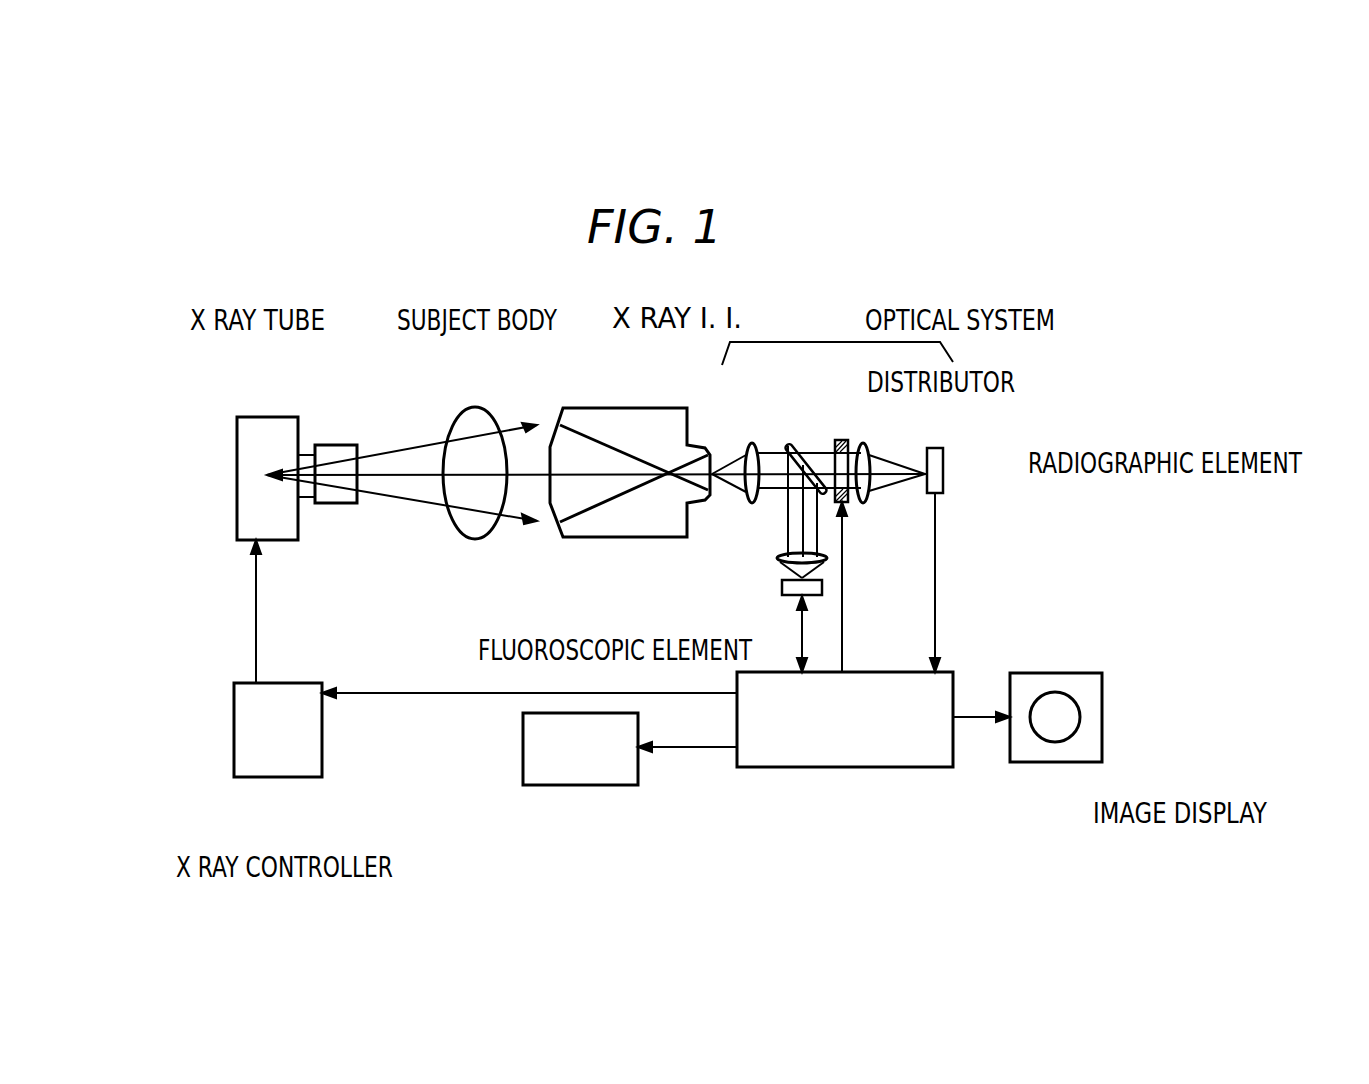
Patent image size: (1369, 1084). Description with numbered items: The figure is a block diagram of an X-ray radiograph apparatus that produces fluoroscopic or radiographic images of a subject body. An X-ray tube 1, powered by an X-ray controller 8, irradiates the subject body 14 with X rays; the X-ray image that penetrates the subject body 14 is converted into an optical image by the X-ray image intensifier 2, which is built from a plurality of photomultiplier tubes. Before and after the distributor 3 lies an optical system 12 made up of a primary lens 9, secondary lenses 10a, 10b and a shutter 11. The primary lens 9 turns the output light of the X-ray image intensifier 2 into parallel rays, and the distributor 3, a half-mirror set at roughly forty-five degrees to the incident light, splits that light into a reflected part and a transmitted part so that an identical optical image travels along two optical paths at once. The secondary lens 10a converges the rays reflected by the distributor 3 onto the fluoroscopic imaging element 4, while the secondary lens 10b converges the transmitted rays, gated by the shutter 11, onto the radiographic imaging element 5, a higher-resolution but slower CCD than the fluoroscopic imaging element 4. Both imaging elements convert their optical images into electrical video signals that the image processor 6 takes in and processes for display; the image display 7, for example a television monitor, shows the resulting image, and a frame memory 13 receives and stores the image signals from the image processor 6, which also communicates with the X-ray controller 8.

The X-ray tube 1 is at (266, 417).
The subject body 14 is at (475, 408).
The X-ray image intensifier 2 is at (622, 408).
The optical system 12 is at (837, 334).
The primary lens 9 is at (752, 443).
The distributor 3 is at (793, 445).
The shutter 11 is at (847, 507).
The secondary lens 10a is at (777, 558).
The secondary lens 10b is at (866, 442).
The fluoroscopic imaging element 4 is at (782, 588).
The radiographic imaging element 5 is at (947, 465).
The image processor 6 is at (847, 767).
The frame memory 13 is at (578, 787).
The image display 7 is at (1055, 762).
The X-ray controller 8 is at (275, 778).